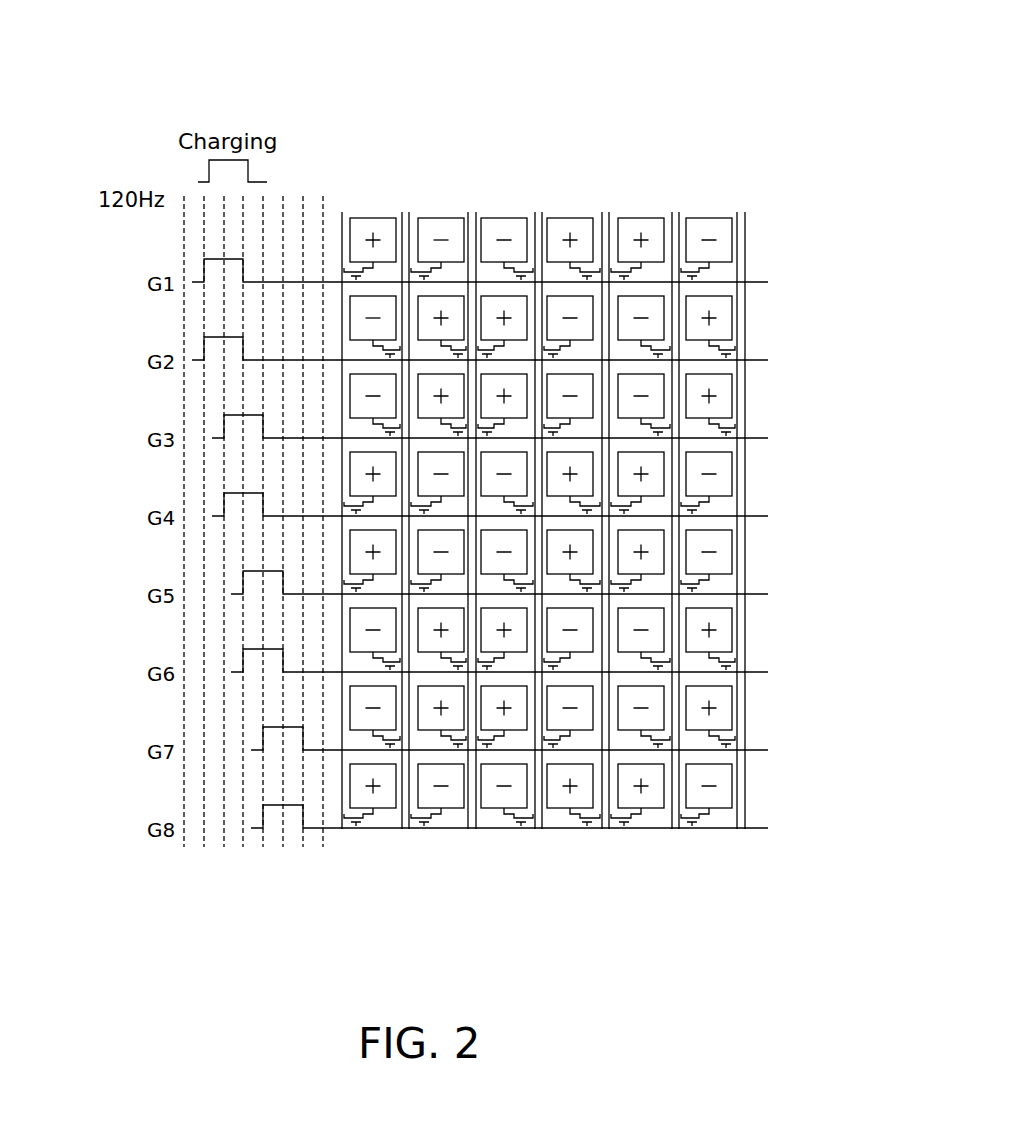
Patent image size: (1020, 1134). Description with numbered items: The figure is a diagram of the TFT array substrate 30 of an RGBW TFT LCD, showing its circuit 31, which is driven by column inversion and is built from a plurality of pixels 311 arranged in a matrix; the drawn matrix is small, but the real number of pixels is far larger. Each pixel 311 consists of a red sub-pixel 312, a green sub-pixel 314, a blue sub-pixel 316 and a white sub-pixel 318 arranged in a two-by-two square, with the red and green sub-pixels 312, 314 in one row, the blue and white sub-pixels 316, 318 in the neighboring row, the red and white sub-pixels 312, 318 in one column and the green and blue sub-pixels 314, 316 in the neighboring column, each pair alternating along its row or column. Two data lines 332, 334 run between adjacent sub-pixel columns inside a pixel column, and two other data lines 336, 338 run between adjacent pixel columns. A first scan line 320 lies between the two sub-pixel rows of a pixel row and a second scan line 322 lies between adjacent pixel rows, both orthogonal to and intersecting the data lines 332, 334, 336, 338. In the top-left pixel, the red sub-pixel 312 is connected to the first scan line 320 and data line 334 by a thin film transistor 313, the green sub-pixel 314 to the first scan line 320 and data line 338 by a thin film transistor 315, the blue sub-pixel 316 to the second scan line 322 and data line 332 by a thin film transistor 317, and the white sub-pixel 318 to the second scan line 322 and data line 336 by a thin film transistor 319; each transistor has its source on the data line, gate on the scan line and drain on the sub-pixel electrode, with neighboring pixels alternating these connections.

The TFT array substrate 30 is at (594, 50).
The circuit 31 is at (714, 196).
The pixel 311 is at (370, 207).
The red sub-pixel 312 is at (443, 227).
The thin film transistor 313 is at (437, 272).
The green sub-pixel 314 is at (358, 231).
The thin film transistor 315 is at (347, 269).
The blue sub-pixel 316 is at (358, 325).
The thin film transistor 317 is at (372, 350).
The white sub-pixel 318 is at (425, 333).
The thin film transistor 319 is at (440, 350).
The first scan line 320 is at (757, 281).
The second scan line 322 is at (750, 359).
The data line 332 is at (402, 212).
The data line 334 is at (410, 212).
The data line 336 is at (467, 212).
The data line 338 is at (342, 212).